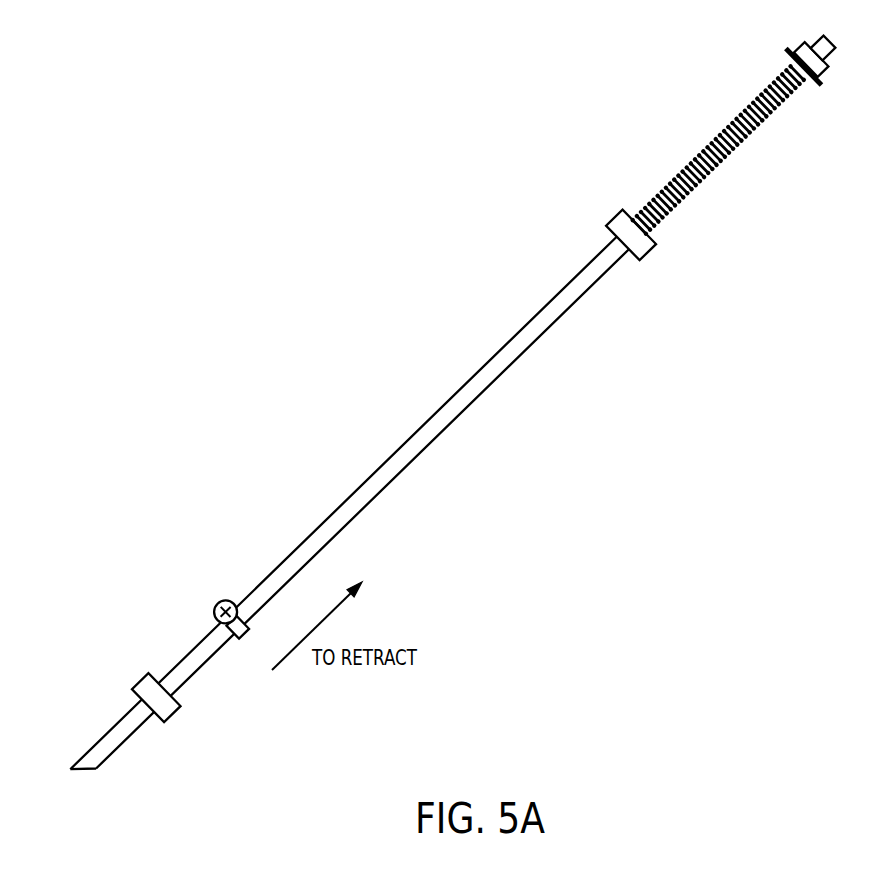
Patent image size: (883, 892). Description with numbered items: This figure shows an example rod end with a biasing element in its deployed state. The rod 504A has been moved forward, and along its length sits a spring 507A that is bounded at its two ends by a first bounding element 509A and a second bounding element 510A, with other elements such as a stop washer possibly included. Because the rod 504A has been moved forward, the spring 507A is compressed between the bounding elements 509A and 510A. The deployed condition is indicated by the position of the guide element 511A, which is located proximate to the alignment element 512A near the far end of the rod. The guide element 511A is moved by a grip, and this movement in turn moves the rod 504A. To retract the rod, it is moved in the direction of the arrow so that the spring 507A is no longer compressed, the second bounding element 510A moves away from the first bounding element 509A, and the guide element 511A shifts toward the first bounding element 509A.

The rod 504A is at (263, 581).
The spring 507A is at (695, 160).
The bounding element 509A is at (613, 215).
The bounding element 510A is at (795, 57).
The guide element 511A is at (220, 602).
The alignment element 512A is at (142, 678).